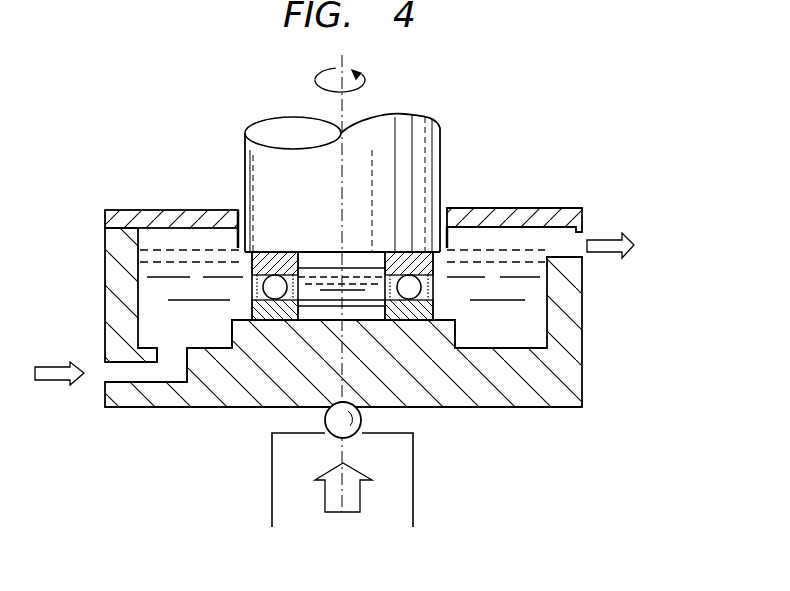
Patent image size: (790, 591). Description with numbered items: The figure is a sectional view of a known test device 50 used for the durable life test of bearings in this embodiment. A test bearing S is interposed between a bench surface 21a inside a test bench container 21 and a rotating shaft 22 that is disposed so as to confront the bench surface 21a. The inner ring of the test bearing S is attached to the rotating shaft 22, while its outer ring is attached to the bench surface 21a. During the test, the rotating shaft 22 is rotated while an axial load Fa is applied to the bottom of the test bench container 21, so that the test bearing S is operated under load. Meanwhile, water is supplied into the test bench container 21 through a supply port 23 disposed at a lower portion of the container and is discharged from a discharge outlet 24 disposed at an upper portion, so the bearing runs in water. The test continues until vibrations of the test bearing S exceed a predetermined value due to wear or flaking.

The test device 50 is at (183, 170).
The test bench container 21 is at (574, 332).
The bench surface 21a is at (240, 314).
The rotating shaft 22 is at (402, 120).
The supply port 23 is at (113, 379).
The discharge outlet 24 is at (583, 234).
The test bearing S is at (253, 288).